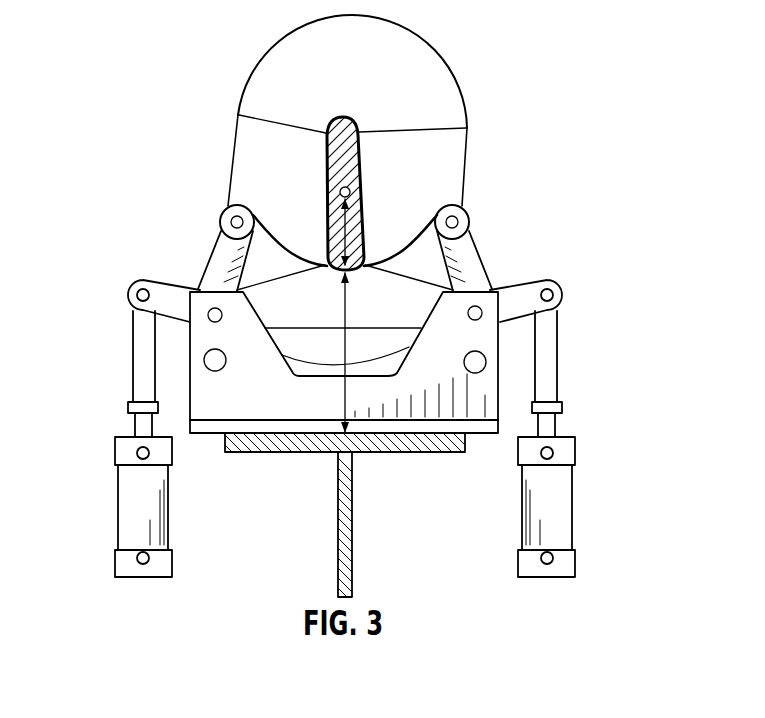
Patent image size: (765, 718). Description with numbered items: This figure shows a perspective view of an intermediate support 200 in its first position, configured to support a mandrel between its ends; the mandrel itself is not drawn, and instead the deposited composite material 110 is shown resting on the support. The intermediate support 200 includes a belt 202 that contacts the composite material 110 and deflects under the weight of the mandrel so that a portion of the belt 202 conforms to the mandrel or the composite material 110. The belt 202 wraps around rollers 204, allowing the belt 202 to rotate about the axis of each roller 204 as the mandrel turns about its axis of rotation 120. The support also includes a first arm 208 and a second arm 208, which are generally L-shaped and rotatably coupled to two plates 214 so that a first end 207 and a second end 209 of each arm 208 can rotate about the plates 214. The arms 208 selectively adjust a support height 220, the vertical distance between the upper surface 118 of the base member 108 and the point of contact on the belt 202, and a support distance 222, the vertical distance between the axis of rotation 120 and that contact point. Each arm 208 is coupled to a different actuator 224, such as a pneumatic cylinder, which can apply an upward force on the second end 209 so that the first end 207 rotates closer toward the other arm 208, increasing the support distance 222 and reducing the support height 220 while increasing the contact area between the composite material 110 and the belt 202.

The intermediate support 200 is at (146, 84).
The composite material 110 is at (277, 78).
The axis of rotation 120 is at (365, 195).
The support distance 222 is at (333, 212).
The belt 202 is at (285, 250).
The support height 220 is at (335, 408).
The roller 204 is at (219, 222).
The first end of arm 207 is at (228, 205).
The arm 208 is at (222, 258).
The second end of arm 209 is at (131, 285).
The actuator 224 is at (130, 495).
The plate 214 is at (308, 407).
The upper surface of base member 118 is at (458, 450).
The base member 108 is at (350, 537).